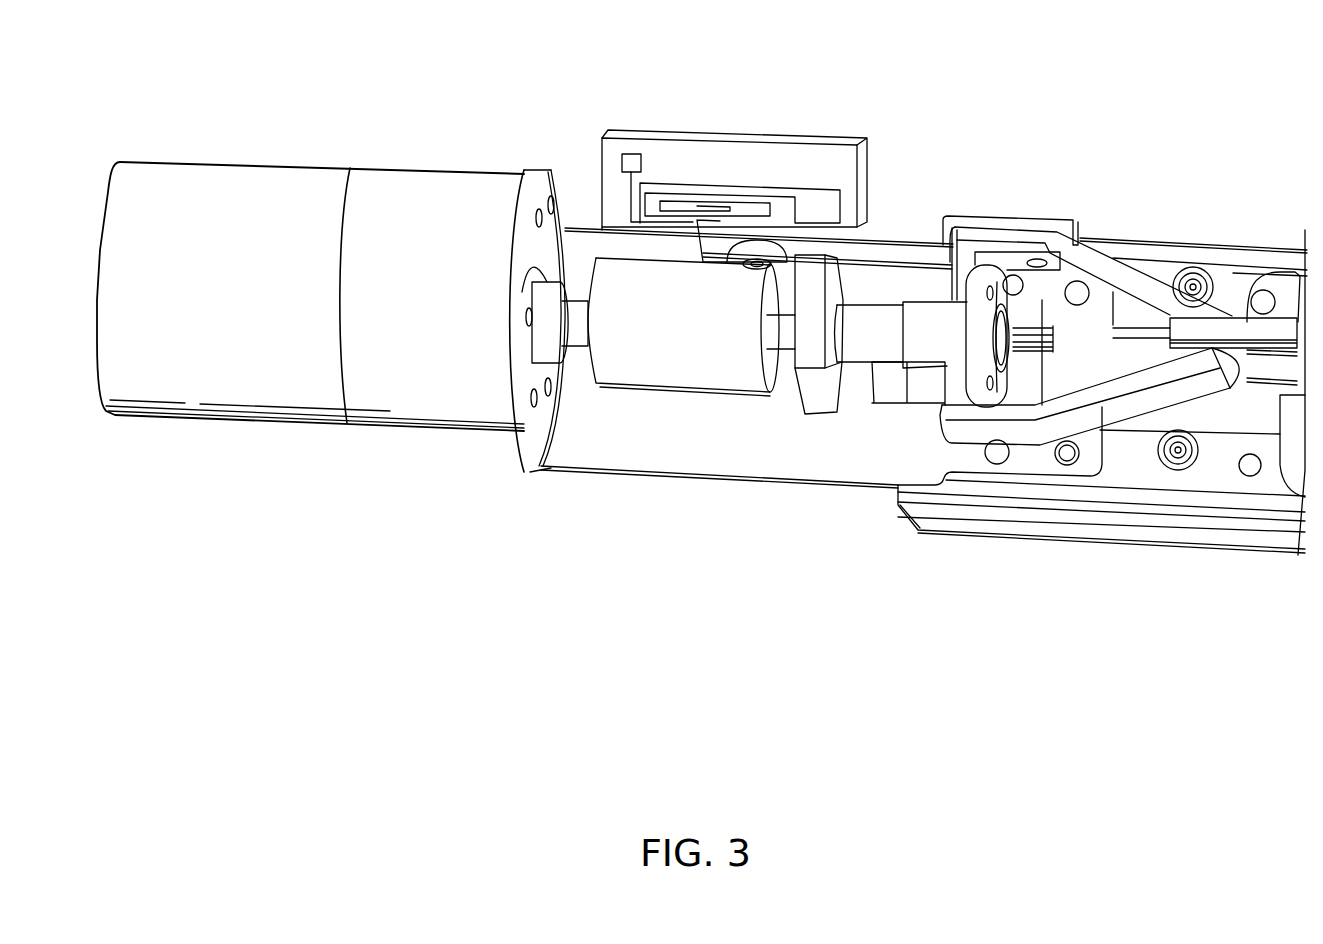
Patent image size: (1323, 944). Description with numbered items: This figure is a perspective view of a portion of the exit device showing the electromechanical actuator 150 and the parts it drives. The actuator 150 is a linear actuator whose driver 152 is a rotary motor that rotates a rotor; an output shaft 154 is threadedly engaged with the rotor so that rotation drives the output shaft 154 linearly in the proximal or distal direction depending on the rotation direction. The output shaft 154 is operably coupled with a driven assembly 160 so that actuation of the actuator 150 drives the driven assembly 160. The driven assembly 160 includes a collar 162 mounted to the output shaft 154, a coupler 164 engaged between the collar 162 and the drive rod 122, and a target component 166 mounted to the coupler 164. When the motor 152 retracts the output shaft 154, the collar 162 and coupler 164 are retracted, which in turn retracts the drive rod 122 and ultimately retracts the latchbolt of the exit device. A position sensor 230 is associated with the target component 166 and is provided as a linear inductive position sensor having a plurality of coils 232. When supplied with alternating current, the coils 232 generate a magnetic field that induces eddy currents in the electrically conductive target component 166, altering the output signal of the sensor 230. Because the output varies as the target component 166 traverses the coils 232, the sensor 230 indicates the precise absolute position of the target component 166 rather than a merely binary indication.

The drive rod 122 is at (1250, 282).
The electromechanical actuator 150 is at (419, 86).
The driver 152 is at (419, 477).
The output shaft 154 is at (712, 415).
The driven assembly 160 is at (884, 497).
The collar 162 is at (930, 362).
The coupler 164 is at (1010, 459).
The target component 166 is at (905, 228).
The position sensor 230 is at (709, 116).
The coils 232 is at (783, 187).